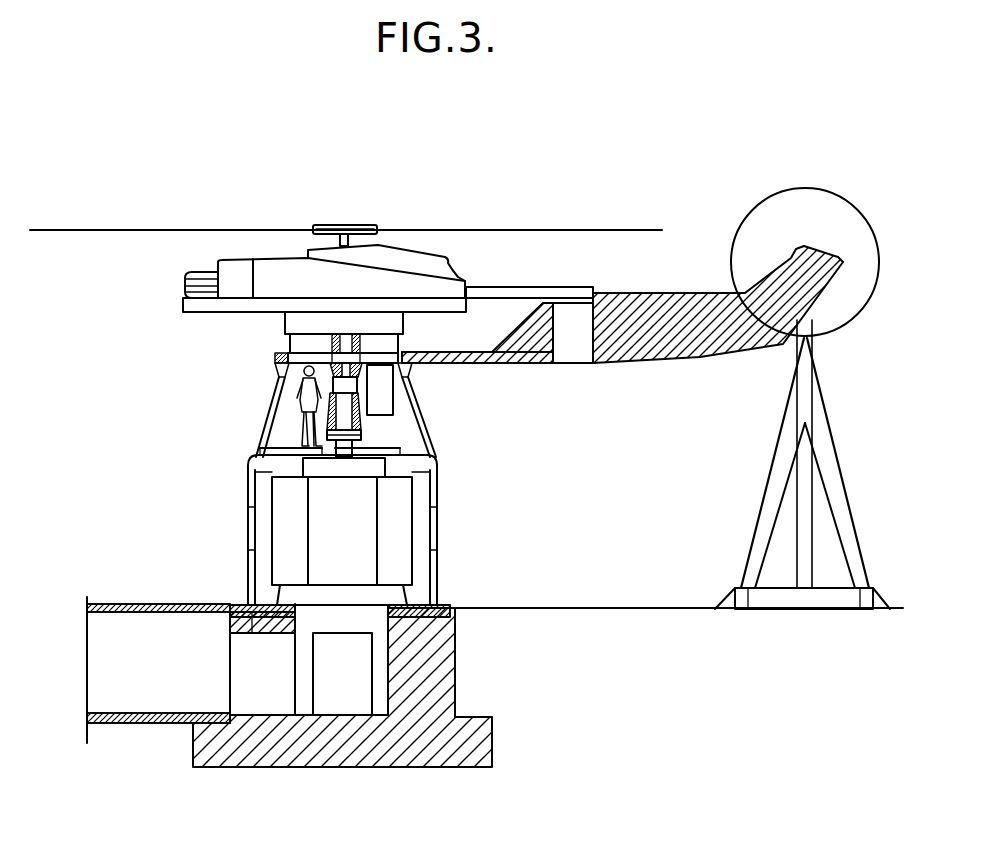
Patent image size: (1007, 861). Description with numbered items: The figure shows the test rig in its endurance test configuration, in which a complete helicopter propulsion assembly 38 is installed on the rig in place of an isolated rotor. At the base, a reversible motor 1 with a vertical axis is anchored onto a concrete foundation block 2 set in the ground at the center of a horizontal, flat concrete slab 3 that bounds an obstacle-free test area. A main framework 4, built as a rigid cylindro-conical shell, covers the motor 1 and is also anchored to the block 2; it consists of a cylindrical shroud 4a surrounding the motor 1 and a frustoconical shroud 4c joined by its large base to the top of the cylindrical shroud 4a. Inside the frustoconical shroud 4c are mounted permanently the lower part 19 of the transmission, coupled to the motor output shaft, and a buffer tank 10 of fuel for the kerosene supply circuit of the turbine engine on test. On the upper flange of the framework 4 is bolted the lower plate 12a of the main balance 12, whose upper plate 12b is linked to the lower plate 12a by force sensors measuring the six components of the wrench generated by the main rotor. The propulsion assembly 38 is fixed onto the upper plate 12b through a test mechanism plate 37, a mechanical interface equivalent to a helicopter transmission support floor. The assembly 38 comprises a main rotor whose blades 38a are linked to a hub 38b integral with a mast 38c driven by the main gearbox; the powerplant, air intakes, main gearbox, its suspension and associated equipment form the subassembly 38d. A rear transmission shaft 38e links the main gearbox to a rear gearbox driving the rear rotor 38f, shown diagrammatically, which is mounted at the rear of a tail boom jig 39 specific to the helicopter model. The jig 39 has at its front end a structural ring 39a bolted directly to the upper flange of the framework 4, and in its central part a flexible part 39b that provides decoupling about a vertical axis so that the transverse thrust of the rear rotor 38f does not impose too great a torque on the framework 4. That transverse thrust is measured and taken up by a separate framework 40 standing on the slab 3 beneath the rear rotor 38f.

The reversible motor 1 is at (370, 518).
The foundation block 2 is at (470, 682).
The slab 3 is at (149, 604).
The main framework 4 is at (447, 469).
The cylindrical shroud 4a is at (438, 528).
The frustoconical shroud 4c is at (428, 426).
The buffer tank 10 is at (385, 392).
The main balance 12 is at (265, 352).
The lower plate 12a is at (384, 357).
The upper plate 12b is at (383, 344).
The lower part of the transmission 19 is at (328, 413).
The test mechanism plate 37 is at (308, 318).
The complete propulsion assembly 38 is at (308, 219).
The blades 38a is at (537, 229).
The hub 38b is at (358, 226).
The mast 38c is at (342, 239).
The subassembly 38d is at (292, 285).
The rear transmission shaft 38e is at (538, 297).
The rear rotor 38f is at (767, 221).
The tail boom jig 39 is at (672, 352).
The structural ring 39a is at (276, 360).
The flexible part 39b is at (575, 366).
The framework for the rear rotor 40 is at (738, 548).